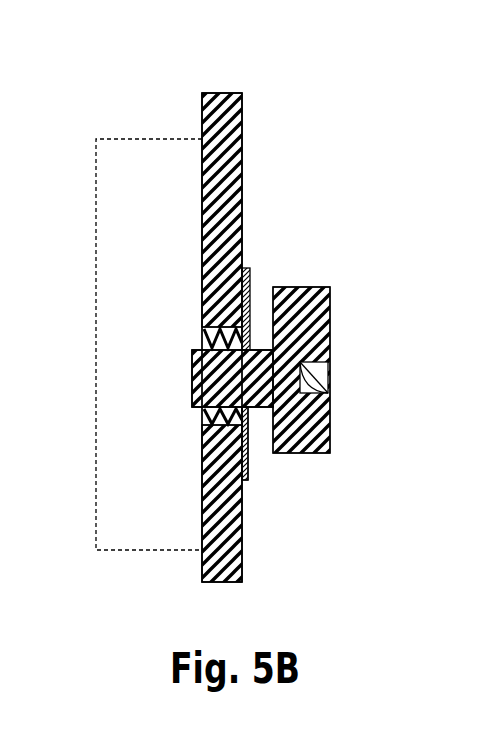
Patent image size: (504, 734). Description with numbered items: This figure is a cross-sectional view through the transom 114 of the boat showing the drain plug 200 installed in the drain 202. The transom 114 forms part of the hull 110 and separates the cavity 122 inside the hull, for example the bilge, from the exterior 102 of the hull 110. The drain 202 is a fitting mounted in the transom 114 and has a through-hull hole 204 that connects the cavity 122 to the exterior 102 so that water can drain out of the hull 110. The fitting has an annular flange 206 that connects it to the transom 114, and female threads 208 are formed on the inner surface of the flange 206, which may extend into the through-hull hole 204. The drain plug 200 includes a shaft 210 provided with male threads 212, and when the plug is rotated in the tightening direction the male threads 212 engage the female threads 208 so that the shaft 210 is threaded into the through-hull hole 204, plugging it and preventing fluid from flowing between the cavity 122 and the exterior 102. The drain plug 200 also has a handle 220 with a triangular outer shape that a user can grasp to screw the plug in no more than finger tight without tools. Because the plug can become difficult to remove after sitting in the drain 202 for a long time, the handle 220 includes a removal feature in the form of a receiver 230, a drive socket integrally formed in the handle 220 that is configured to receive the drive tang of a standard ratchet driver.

The exterior 102 is at (397, 268).
The hull 110 is at (223, 107).
The transom 114 is at (243, 140).
The cavity 122 is at (124, 182).
The drain plug 200 is at (308, 268).
The drain 202 is at (176, 310).
The through-hull hole 204 is at (183, 356).
The flange 206 is at (247, 270).
The female threads 208 is at (203, 408).
The shaft 210 is at (261, 412).
The male threads 212 is at (248, 472).
The handle 220 is at (303, 424).
The receiver 230 is at (331, 376).